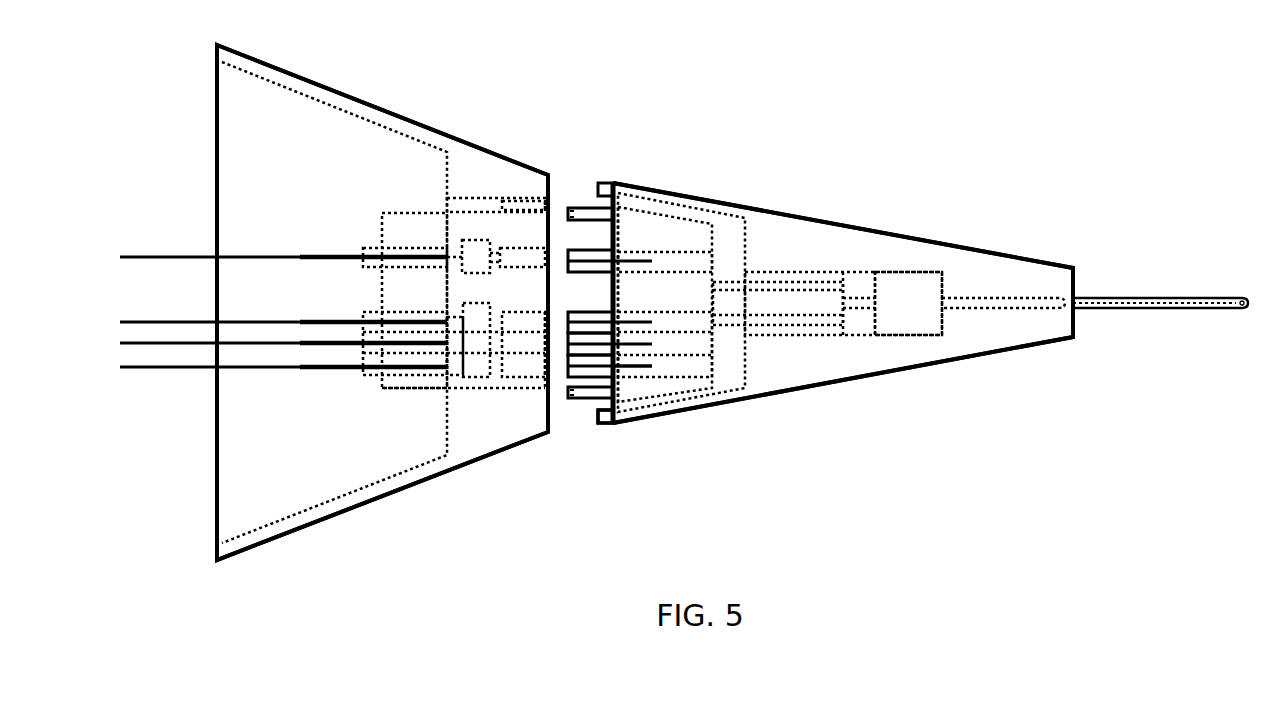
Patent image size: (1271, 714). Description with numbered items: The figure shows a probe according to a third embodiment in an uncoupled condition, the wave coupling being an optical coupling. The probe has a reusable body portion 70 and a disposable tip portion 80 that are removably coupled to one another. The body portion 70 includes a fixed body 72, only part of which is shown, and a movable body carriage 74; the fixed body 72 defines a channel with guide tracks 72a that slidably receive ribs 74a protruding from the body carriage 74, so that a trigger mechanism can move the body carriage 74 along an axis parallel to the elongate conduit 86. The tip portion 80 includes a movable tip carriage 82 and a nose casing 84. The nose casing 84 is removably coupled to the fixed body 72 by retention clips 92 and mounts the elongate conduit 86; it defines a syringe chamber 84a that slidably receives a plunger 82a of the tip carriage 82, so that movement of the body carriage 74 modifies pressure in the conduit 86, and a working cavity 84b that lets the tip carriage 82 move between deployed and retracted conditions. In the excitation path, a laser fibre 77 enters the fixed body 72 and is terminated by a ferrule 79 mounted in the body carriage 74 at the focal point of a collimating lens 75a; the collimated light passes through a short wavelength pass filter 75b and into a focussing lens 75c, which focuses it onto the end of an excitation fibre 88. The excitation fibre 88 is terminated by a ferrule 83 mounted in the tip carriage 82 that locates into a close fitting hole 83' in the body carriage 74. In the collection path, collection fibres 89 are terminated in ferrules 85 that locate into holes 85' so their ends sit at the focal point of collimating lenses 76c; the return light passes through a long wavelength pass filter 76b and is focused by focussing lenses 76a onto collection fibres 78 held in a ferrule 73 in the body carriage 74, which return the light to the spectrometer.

The body portion 70 is at (492, 84).
The fixed body 72 is at (325, 96).
The guide track 72a is at (468, 203).
The ferrule 73 is at (395, 373).
The body carriage 74 is at (477, 293).
The rib 74a is at (512, 198).
The collimating lens 75a is at (457, 252).
The short wavelength pass filter 75b is at (492, 250).
The focussing lens 75c is at (530, 258).
The focussing lens 76a is at (457, 366).
The long wavelength pass filter 76b is at (472, 372).
The collimating lens 76c is at (497, 370).
The laser fibre 77 is at (278, 255).
The collection fibre 78 is at (238, 369).
The ferrule 79 is at (402, 252).
The tip portion 80 is at (852, 181).
The tip carriage 82 is at (680, 287).
The plunger 82a is at (862, 283).
The ferrule 83 is at (615, 281).
The hole 83' is at (572, 210).
The nose casing 84 is at (907, 370).
The syringe chamber 84a is at (922, 288).
The working cavity 84b is at (730, 377).
The ferrule 85 is at (590, 435).
The hole 85' is at (573, 457).
The elongate conduit 86 is at (1128, 303).
The excitation fibre 88 is at (633, 260).
The collection fibre 89 is at (632, 366).
The retention clip 92 is at (605, 423).